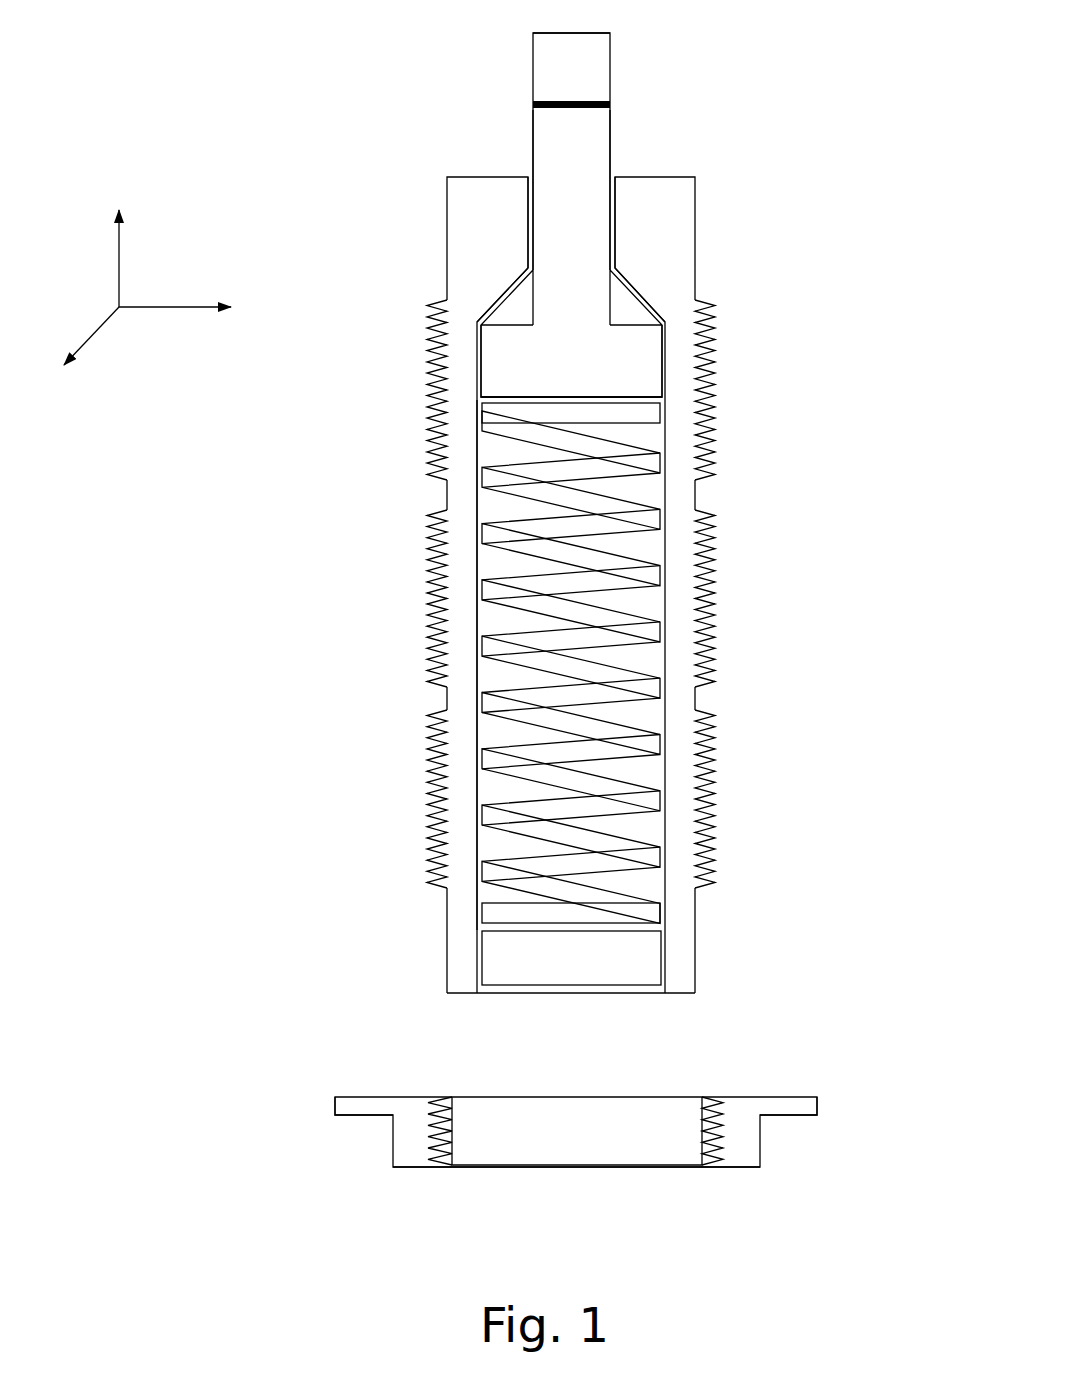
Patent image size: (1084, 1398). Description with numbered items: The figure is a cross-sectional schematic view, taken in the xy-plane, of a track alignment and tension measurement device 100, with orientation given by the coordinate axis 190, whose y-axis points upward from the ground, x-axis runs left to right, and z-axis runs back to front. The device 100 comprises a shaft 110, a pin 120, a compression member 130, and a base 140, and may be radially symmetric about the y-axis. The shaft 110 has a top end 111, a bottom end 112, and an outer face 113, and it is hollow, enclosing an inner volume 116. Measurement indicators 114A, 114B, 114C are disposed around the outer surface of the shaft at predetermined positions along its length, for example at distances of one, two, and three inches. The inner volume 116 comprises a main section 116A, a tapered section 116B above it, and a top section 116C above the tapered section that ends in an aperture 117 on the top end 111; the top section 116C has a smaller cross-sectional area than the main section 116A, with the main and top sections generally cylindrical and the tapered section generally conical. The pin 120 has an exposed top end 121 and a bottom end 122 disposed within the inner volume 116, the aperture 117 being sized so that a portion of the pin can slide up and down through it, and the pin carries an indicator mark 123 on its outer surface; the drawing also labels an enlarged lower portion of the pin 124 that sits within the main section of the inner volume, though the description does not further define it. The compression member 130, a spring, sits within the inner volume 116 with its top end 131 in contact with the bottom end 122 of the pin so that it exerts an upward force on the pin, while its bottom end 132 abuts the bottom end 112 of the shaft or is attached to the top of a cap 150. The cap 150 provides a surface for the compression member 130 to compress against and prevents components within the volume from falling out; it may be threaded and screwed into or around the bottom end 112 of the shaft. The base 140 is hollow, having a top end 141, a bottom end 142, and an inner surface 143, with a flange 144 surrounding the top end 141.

The track tension measurement device 100 is at (557, 629).
The shaft 110 is at (577, 602).
The top end 111 is at (650, 208).
The bottom end 112 is at (683, 998).
The outer face 113 is at (667, 591).
The measurement indicator 114A is at (702, 296).
The measurement indicator 114B is at (702, 495).
The measurement indicator 114C is at (702, 693).
The inner volume 116 is at (387, 553).
The main section 116A is at (505, 682).
The tapered section 116B is at (514, 317).
The top section 116C is at (527, 232).
The aperture 117 is at (530, 173).
The pin 120 is at (529, 225).
The top end 121 is at (567, 46).
The bottom end 122 is at (545, 387).
The indicator mark 123 is at (531, 104).
The plunger head 124 is at (505, 357).
The compression member 130 is at (695, 680).
The top end 131 is at (637, 410).
The bottom end 132 is at (594, 914).
The base 140 is at (505, 1126).
The top end 141 is at (449, 1096).
The bottom end 142 is at (505, 1172).
The inner surface 143 is at (695, 1128).
The flange 144 is at (370, 1118).
The cap 150 is at (504, 965).
The coordinate axis 190 is at (153, 367).